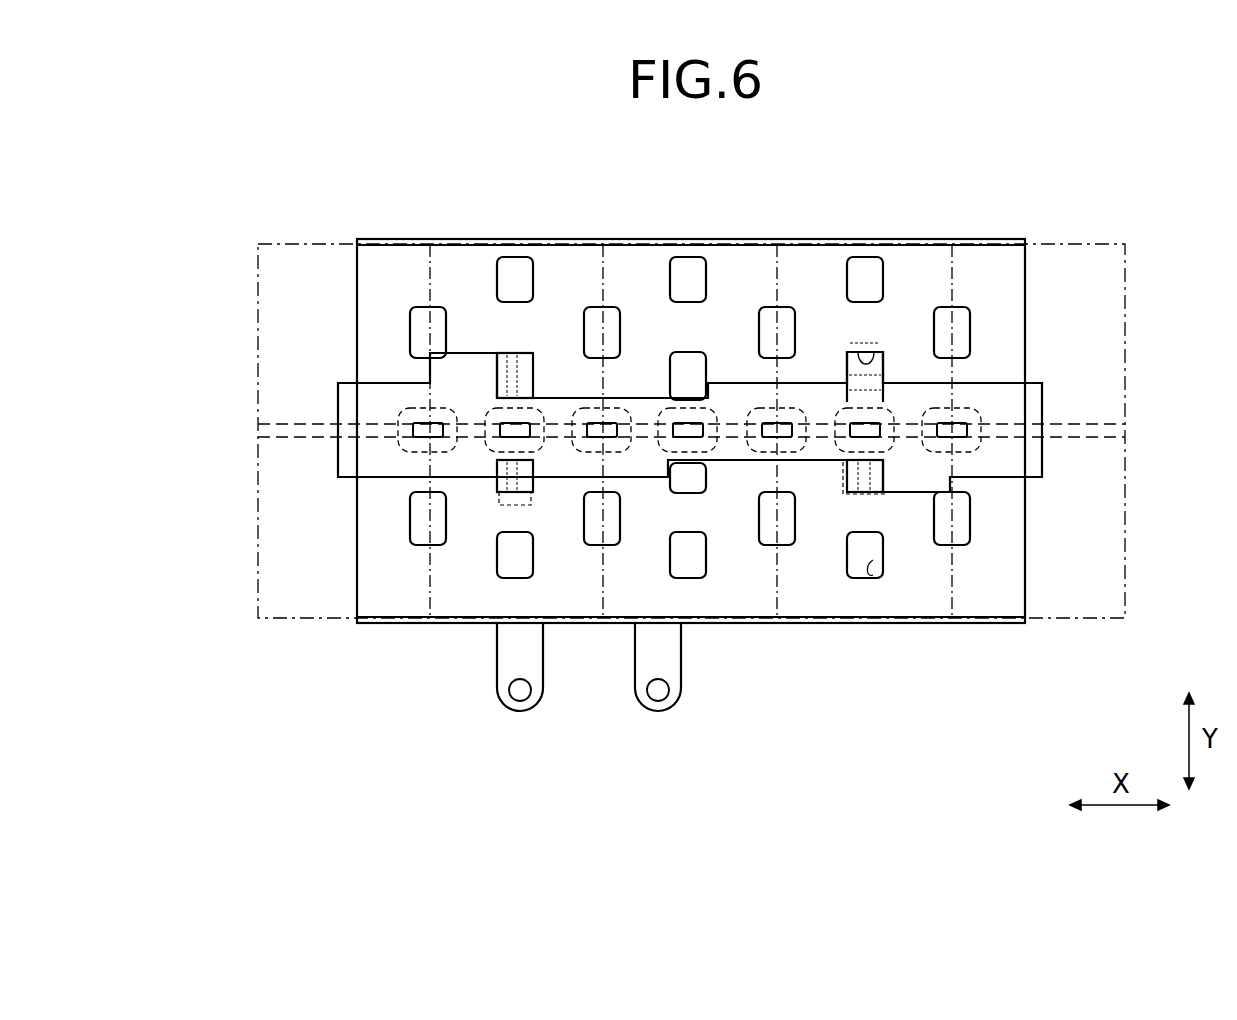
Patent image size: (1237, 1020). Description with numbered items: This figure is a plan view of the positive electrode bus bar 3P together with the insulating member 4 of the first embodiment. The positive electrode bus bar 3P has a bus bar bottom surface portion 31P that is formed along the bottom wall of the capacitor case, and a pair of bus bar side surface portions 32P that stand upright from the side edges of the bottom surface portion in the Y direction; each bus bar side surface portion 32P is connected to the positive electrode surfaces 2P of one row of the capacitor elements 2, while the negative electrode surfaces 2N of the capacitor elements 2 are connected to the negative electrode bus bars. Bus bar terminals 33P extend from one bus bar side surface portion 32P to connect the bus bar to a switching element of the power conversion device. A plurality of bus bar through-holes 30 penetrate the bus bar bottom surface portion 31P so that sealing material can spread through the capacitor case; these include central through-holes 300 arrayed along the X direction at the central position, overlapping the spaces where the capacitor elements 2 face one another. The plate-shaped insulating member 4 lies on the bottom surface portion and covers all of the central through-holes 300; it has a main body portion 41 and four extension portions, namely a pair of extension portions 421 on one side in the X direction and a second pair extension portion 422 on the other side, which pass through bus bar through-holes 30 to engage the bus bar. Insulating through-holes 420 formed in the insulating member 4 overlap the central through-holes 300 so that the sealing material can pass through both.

The capacitor element 2 is at (258, 555).
The negative electrode surface 2N is at (1090, 425).
The positive electrode surface 2P is at (1062, 241).
The positive electrode bus bar 3P is at (357, 307).
The bus bar bottom surface portion 31P is at (744, 277).
The bus bar side surface portion 32P is at (665, 240).
The bus bar terminal 33P is at (520, 712).
The insulating member 4 is at (372, 455).
The main body portion 41 is at (372, 400).
The bus bar through-hole 30 is at (860, 365).
The central through-hole 300 is at (968, 425).
The insulating through-hole 420 is at (413, 428).
The pair of extension portions 421 is at (918, 655).
The second pair extension portion 422 is at (443, 650).